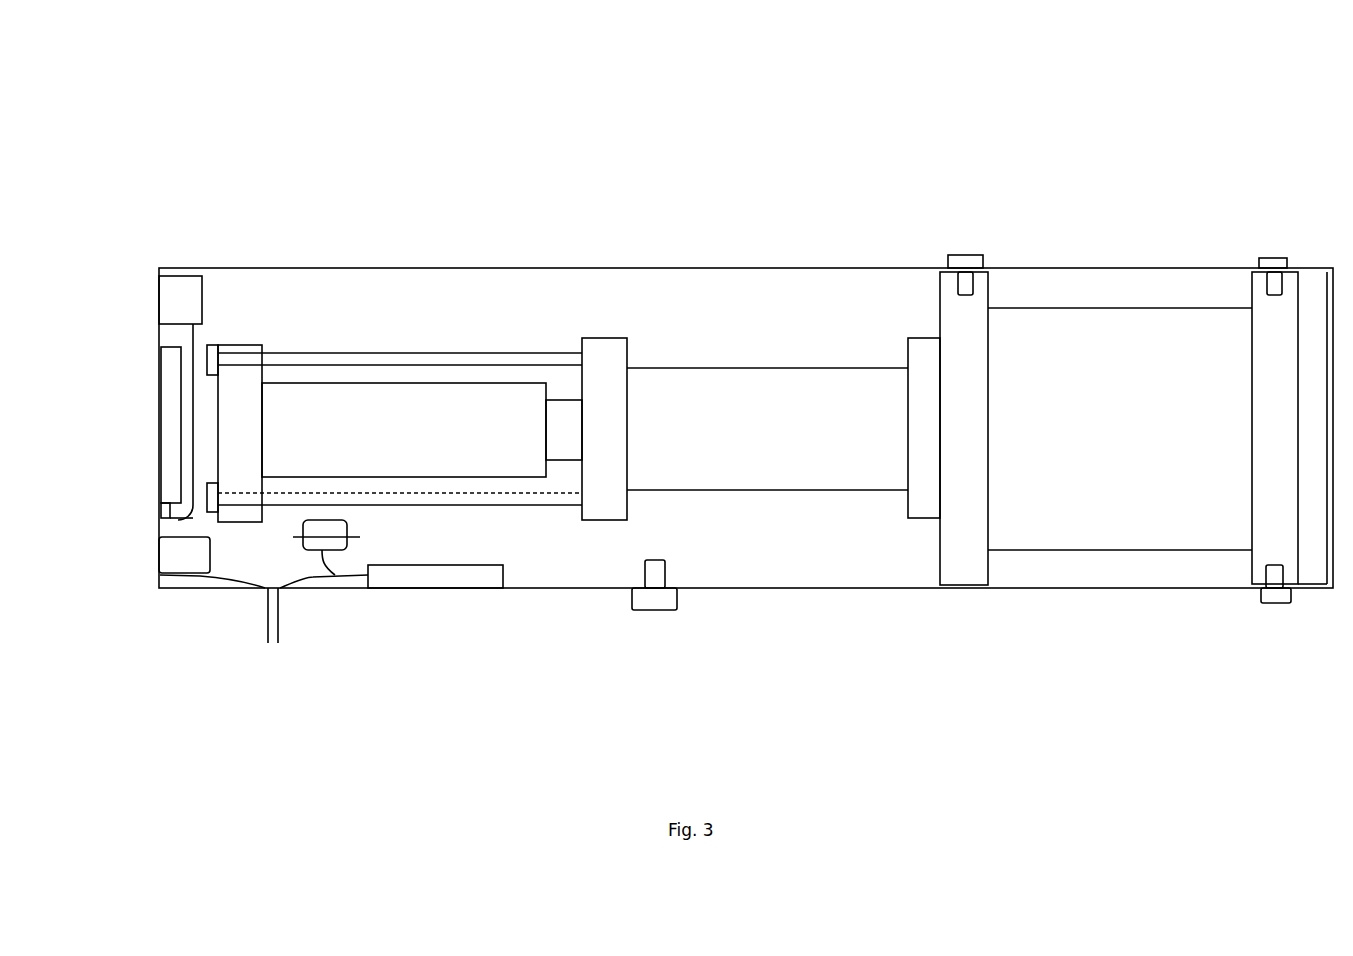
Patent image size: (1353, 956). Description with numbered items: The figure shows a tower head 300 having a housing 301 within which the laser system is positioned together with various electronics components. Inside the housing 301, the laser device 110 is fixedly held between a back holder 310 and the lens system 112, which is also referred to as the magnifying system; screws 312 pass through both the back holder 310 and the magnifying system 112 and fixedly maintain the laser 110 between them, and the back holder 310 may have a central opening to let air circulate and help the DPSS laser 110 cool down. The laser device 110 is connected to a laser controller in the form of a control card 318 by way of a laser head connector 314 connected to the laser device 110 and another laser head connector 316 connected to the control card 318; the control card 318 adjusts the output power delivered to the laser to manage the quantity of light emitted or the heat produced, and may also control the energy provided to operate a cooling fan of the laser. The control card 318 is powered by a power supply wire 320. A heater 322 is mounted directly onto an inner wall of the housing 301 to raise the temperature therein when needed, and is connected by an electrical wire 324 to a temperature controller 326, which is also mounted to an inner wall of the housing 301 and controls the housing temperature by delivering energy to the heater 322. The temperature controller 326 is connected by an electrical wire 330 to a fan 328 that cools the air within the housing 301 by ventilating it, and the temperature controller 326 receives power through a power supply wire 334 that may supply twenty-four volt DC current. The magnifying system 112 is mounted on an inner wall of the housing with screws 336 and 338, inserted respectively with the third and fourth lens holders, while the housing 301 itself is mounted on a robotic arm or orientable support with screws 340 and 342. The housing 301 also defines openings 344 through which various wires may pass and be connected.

The tower head 300 is at (552, 243).
The housing 301 is at (678, 268).
The laser device 110 is at (444, 429).
The lens system 112 is at (939, 429).
The back holder 310 is at (233, 343).
The screws 312 is at (417, 352).
The laser head connector 314 is at (287, 477).
The laser head connector 316 is at (336, 580).
The control card 318 is at (428, 590).
The power supply wire 320 is at (280, 625).
The heater 322 is at (202, 305).
The electrical wire 324 is at (218, 346).
The temperature controller 326 is at (165, 588).
The fan 328 is at (163, 345).
The electrical wire 330 is at (165, 520).
The power supply wire 334 is at (267, 610).
The screw 336 is at (960, 253).
The screw 338 is at (1270, 256).
The screw 340 is at (655, 610).
The screw 342 is at (1275, 603).
The openings 344 is at (280, 590).